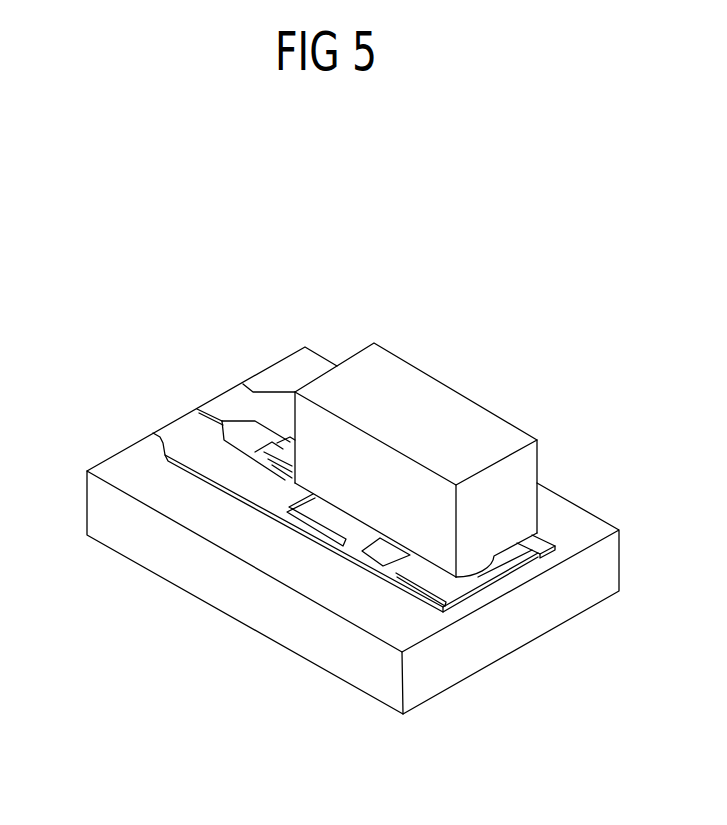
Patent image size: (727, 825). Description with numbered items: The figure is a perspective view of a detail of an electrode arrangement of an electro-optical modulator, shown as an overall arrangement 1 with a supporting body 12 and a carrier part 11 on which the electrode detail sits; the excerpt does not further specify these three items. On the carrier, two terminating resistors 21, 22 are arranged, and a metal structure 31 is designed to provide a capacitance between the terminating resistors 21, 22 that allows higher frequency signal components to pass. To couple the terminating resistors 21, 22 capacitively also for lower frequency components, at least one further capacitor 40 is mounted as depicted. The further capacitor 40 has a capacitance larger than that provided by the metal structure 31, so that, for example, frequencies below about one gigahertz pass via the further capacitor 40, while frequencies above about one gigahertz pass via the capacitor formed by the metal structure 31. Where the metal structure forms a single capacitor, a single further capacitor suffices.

The optoelectronic component / device 1 is at (260, 270).
The carrier substrate 11 is at (262, 402).
The base body 12 is at (187, 451).
The terminating resistor 21 is at (290, 447).
The terminating resistor 22 is at (270, 462).
The metal structure 31 is at (247, 435).
The further capacitor 40 is at (485, 432).